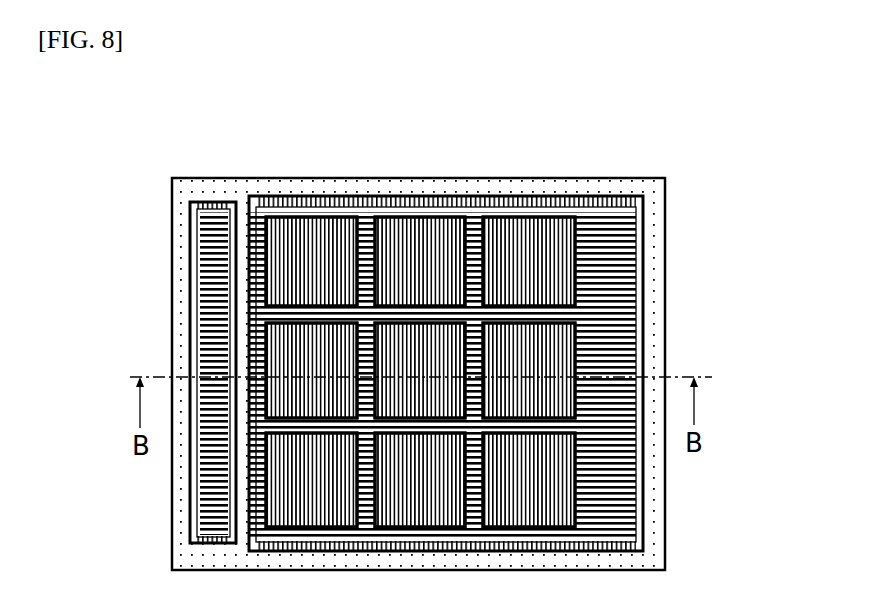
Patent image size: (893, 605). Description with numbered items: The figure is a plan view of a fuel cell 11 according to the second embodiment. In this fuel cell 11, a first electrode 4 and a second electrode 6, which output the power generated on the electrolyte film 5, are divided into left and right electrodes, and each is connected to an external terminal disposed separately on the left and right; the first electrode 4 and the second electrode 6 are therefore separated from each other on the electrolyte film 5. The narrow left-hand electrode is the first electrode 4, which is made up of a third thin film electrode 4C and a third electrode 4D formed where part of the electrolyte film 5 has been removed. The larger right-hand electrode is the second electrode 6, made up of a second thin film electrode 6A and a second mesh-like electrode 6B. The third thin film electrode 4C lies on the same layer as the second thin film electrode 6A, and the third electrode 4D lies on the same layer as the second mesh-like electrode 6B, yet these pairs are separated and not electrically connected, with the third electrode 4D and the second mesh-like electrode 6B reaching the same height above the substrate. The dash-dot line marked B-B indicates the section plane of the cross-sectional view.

The fuel cell 11 is at (433, 334).
The electrolyte film 5 is at (182, 203).
The first electrode 4 is at (139, 372).
The third thin film electrode 4C is at (192, 345).
The third electrode 4D is at (195, 318).
The second electrode 6 is at (537, 370).
The second thin film electrode 6A is at (640, 283).
The second mesh-like electrode 6B is at (628, 235).